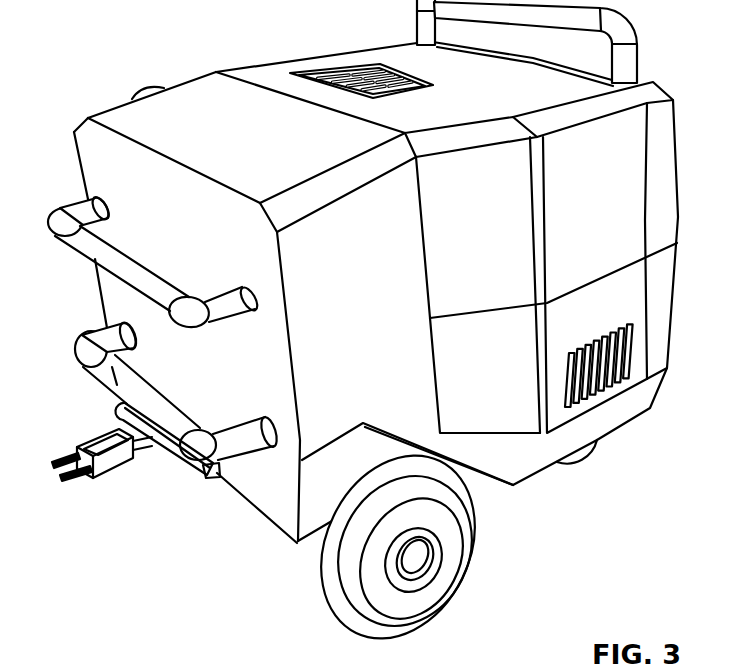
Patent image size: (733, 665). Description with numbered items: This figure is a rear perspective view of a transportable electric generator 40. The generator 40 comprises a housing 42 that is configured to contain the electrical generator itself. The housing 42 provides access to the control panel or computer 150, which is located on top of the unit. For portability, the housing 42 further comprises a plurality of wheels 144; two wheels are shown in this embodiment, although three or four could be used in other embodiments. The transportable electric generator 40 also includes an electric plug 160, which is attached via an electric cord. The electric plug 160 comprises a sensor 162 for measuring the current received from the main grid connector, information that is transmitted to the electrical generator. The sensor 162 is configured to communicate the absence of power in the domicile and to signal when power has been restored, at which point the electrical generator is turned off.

The transportable electric generator 40 is at (139, 74).
The housing 42 is at (90, 168).
The control panel or computer 150 is at (350, 80).
The wheels 144 is at (470, 518).
The electric plug 160 is at (83, 437).
The sensor 162 is at (110, 443).